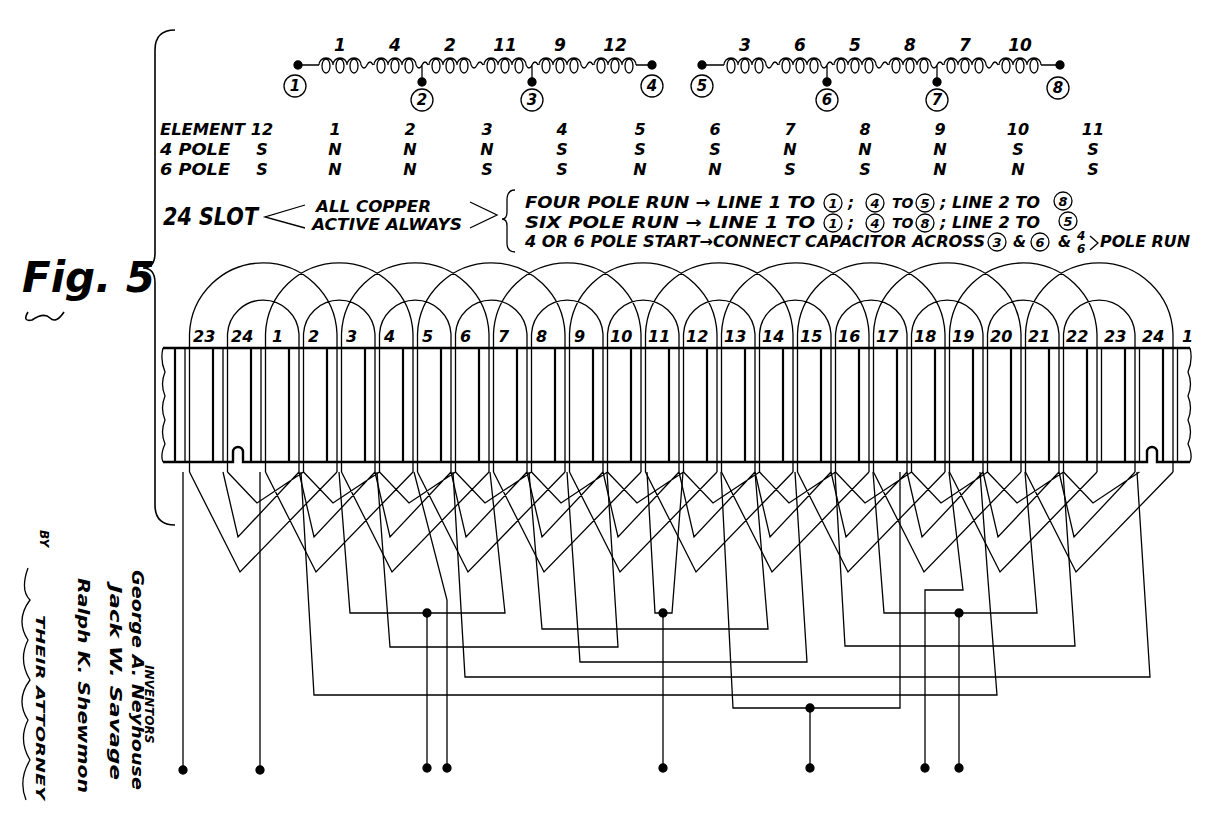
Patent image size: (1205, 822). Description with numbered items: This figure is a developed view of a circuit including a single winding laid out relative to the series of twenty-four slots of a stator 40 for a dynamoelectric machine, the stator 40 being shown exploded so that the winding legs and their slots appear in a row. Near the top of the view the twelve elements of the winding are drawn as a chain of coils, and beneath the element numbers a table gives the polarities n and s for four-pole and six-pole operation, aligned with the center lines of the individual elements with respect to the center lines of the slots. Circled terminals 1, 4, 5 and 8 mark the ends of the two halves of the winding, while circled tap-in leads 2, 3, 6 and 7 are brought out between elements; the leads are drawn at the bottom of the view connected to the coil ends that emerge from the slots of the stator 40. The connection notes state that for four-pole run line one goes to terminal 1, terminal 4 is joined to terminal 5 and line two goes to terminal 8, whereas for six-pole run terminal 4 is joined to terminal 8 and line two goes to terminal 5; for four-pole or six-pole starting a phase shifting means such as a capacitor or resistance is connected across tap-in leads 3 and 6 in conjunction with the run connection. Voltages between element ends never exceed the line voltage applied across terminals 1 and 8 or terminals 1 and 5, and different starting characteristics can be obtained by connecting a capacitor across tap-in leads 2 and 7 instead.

The stator 40 is at (676, 376).
The terminal 1 is at (260, 637).
The tap-in lead 2 is at (422, 637).
The tap-in lead 3 is at (955, 637).
The terminal 4 is at (183, 637).
The terminal 5 is at (439, 637).
The tap-in lead 6 is at (665, 637).
The tap-in lead 7 is at (810, 637).
The terminal 8 is at (938, 637).